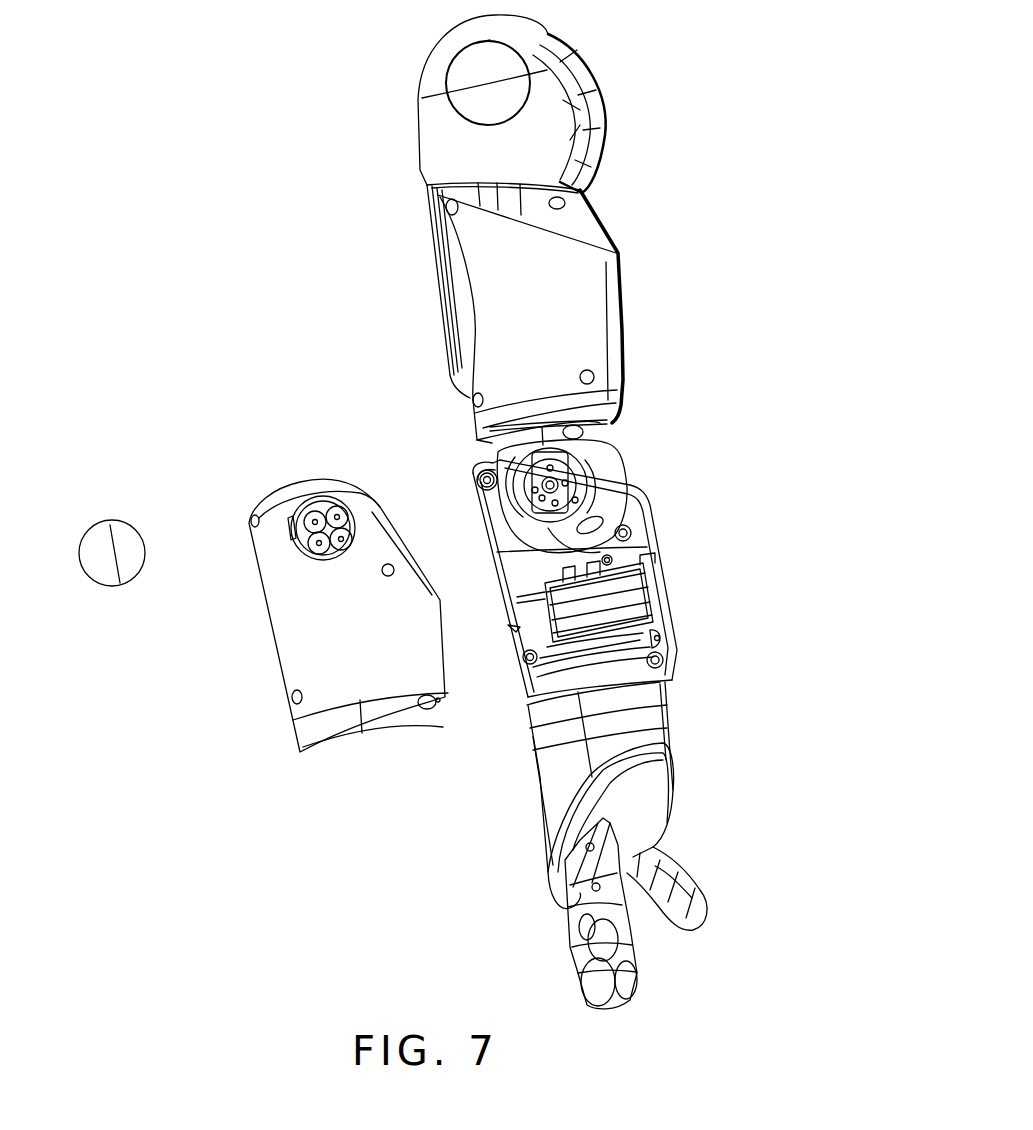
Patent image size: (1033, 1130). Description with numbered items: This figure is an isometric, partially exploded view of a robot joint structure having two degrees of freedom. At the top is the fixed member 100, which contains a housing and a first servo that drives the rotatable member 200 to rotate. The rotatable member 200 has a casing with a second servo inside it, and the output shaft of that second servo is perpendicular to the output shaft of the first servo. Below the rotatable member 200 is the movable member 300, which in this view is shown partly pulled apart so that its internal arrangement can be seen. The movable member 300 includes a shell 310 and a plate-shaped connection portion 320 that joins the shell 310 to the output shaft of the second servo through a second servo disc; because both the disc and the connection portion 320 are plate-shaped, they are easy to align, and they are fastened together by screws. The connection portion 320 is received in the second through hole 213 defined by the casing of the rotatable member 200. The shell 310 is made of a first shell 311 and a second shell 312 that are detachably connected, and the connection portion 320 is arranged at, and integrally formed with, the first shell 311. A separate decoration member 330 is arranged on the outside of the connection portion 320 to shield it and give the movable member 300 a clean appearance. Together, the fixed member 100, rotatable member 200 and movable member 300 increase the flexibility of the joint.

The fixed member 100 is at (588, 292).
The rotatable member 200 is at (603, 460).
The second through hole 213 is at (587, 480).
The movable member 300 is at (703, 588).
The shell 310 is at (423, 400).
The first shell 311 is at (303, 488).
The second shell 312 is at (470, 497).
The connection portion 320 is at (290, 524).
The decoration member 330 is at (97, 530).